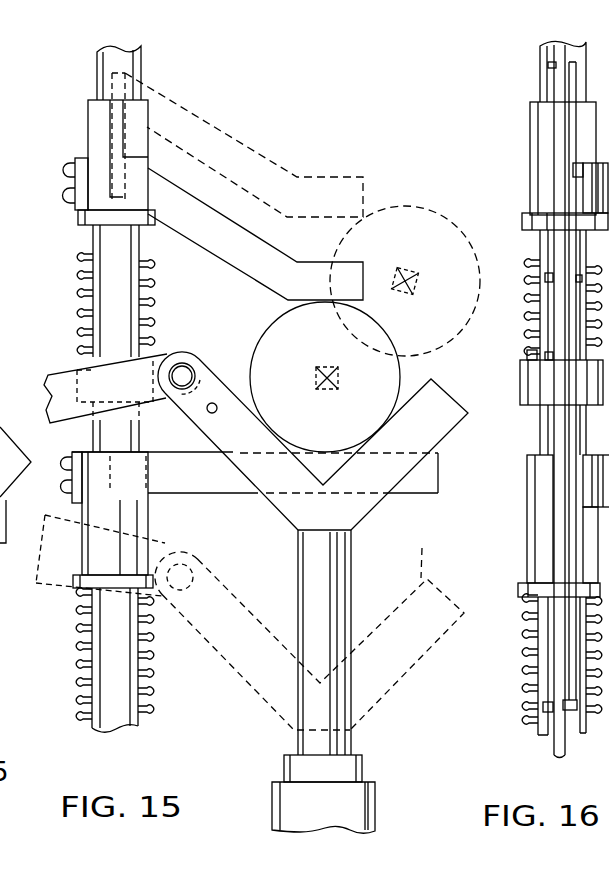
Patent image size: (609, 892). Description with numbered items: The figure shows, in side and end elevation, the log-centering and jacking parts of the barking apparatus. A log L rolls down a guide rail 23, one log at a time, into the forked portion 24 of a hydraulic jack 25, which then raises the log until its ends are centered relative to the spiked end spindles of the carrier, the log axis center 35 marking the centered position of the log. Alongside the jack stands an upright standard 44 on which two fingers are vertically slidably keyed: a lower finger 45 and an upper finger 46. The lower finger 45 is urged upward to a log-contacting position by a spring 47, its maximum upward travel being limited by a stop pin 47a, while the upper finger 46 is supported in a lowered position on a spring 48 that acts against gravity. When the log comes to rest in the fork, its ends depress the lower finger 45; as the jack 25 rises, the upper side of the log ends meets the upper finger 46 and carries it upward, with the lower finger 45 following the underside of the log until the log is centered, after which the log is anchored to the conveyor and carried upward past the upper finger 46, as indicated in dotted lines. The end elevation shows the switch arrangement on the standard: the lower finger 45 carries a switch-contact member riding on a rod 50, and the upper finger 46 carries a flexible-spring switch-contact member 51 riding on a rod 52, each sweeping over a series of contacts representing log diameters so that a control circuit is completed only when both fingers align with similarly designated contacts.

In FIG. 15, the standard 44 is at (108, 67).
In FIG. 16, the standard 44 is at (548, 52).
In FIG. 15, the finger 46 is at (265, 150).
In FIG. 15, the roll axis center 35 is at (327, 391).
In FIG. 15, the spring 48 is at (80, 293).
In FIG. 16, the spring 48 is at (530, 320).
In FIG. 15, the guide rail 23 is at (60, 387).
In FIG. 15, the stop pin 47a is at (208, 412).
In FIG. 15, the finger 45 is at (223, 482).
In FIG. 15, the forked portion 24 is at (366, 505).
In FIG. 15, the spring 47 is at (80, 677).
In FIG. 16, the spring 47 is at (525, 664).
In FIG. 15, the hydraulic jack 25 is at (300, 802).
In FIG. 15, the roll L is at (256, 350).
In FIG. 16, the rod 52 is at (585, 83).
In FIG. 16, the flexible-spring switch-contact member 51 is at (594, 172).
In FIG. 16, the rod 50 is at (582, 383).